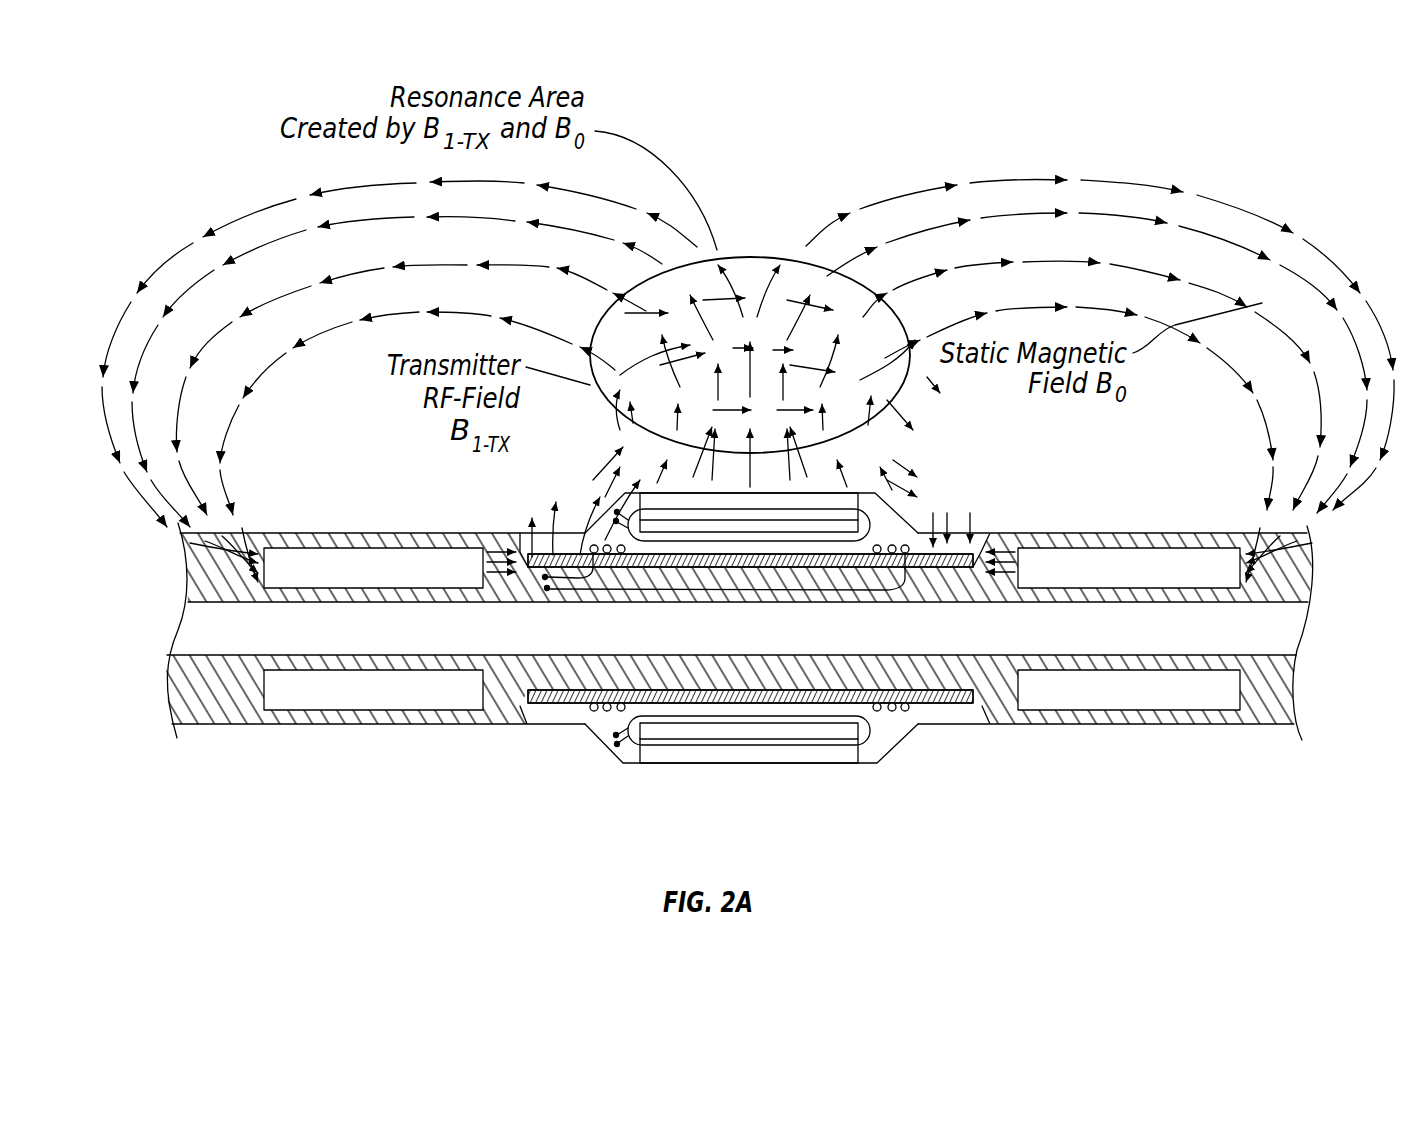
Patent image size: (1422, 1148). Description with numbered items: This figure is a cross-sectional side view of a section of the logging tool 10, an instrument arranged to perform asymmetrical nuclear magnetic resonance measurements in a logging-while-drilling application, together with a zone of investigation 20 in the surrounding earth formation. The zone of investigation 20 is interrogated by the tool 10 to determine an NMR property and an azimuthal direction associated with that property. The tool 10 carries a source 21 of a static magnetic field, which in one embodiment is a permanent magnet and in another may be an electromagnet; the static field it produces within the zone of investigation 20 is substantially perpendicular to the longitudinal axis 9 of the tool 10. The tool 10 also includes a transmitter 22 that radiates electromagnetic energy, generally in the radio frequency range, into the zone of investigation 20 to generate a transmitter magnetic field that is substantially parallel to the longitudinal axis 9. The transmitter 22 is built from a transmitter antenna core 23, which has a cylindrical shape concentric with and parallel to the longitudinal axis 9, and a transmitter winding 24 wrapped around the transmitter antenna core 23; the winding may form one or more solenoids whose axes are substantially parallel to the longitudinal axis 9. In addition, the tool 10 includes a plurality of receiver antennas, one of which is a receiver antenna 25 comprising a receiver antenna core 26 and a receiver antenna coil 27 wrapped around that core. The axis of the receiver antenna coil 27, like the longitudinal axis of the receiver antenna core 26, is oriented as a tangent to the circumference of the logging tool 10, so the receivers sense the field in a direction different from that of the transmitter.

The longitudinal axis 9 is at (187, 628).
The logging tool 10 is at (197, 572).
The zone of investigation 20 is at (755, 257).
The source of a static magnetic field 21 is at (340, 552).
The transmitter 22 is at (533, 720).
The transmitter antenna core 23 is at (549, 703).
The transmitter winding 24 is at (594, 704).
The receiver antenna 25 is at (786, 752).
The receiver antenna core 26 is at (740, 736).
The receiver antenna coil 27 is at (870, 738).